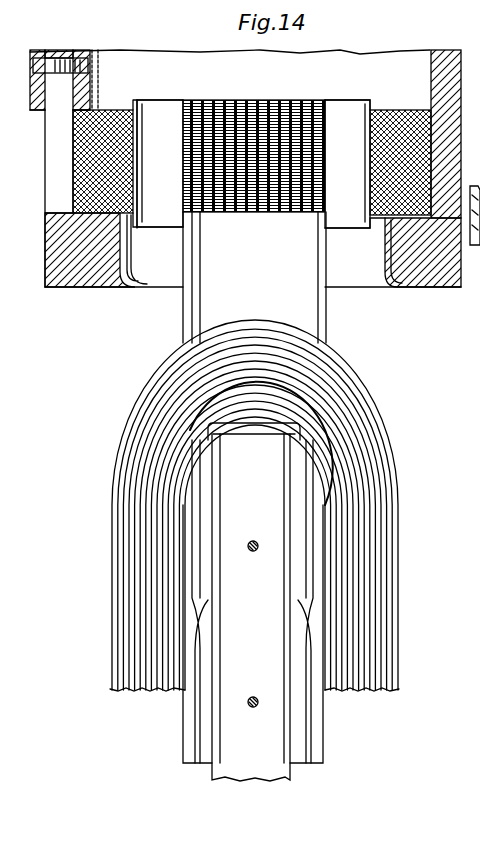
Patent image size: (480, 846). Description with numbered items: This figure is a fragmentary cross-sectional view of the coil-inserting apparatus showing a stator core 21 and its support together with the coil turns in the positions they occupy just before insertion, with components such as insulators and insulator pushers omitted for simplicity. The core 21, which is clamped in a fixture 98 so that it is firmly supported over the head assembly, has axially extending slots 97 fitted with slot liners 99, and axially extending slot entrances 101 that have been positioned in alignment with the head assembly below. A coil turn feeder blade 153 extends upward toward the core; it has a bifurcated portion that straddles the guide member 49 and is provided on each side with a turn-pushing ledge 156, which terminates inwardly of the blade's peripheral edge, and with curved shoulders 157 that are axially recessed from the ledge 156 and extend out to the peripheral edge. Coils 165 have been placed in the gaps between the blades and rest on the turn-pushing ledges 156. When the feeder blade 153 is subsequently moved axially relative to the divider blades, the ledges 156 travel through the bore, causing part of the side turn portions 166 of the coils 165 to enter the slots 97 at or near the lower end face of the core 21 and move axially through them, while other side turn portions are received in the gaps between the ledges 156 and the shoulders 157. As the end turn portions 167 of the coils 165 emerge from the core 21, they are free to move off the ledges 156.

The stator core 21 is at (109, 110).
The slot liners 99 is at (150, 100).
The slots 97 is at (163, 117).
The slot entrances 101 is at (217, 100).
The fixture 98 is at (87, 273).
The coil turn feeder blade 153 is at (307, 305).
The end turn portions 167 is at (254, 330).
The turn-pushing ledges 156 is at (260, 434).
The coils 165 is at (400, 519).
The side turn portions 166 is at (122, 560).
The curved shoulders 157 is at (197, 623).
The guide member 49 is at (250, 778).